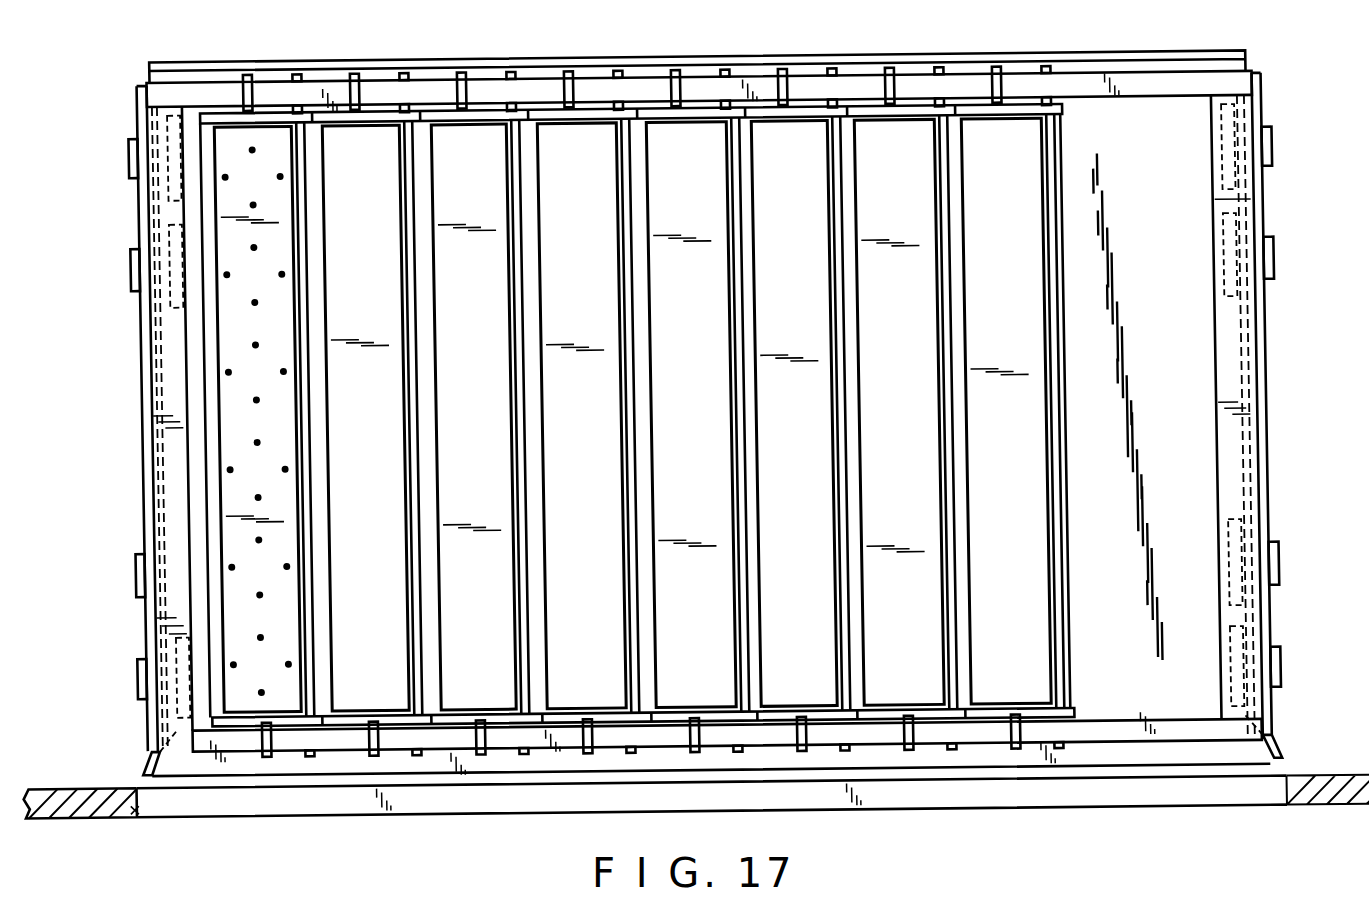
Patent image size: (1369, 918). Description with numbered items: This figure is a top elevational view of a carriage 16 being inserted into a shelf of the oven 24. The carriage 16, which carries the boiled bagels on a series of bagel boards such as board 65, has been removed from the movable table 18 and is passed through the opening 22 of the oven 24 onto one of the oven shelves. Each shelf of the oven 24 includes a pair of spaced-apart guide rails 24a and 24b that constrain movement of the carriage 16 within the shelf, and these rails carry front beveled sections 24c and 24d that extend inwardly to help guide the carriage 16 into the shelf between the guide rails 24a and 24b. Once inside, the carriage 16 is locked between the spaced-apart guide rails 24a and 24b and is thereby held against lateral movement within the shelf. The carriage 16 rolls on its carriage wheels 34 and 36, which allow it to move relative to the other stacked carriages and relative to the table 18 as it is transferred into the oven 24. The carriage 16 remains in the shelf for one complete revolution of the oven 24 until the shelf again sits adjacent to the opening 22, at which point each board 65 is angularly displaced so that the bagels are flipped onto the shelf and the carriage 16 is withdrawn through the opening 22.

The carriage 16 is at (1215, 365).
The guide rail 24a is at (150, 372).
The guide rail 24b is at (1268, 415).
The front beveled section 24c is at (146, 775).
The front beveled section 24d is at (1263, 748).
The carriage wheel 34 is at (137, 583).
The carriage wheel 36 is at (1238, 533).
The opening 22 is at (315, 802).
The oven 24 is at (126, 812).
The bagel board 65 is at (1035, 638).
The table 18 is at (78, 779).